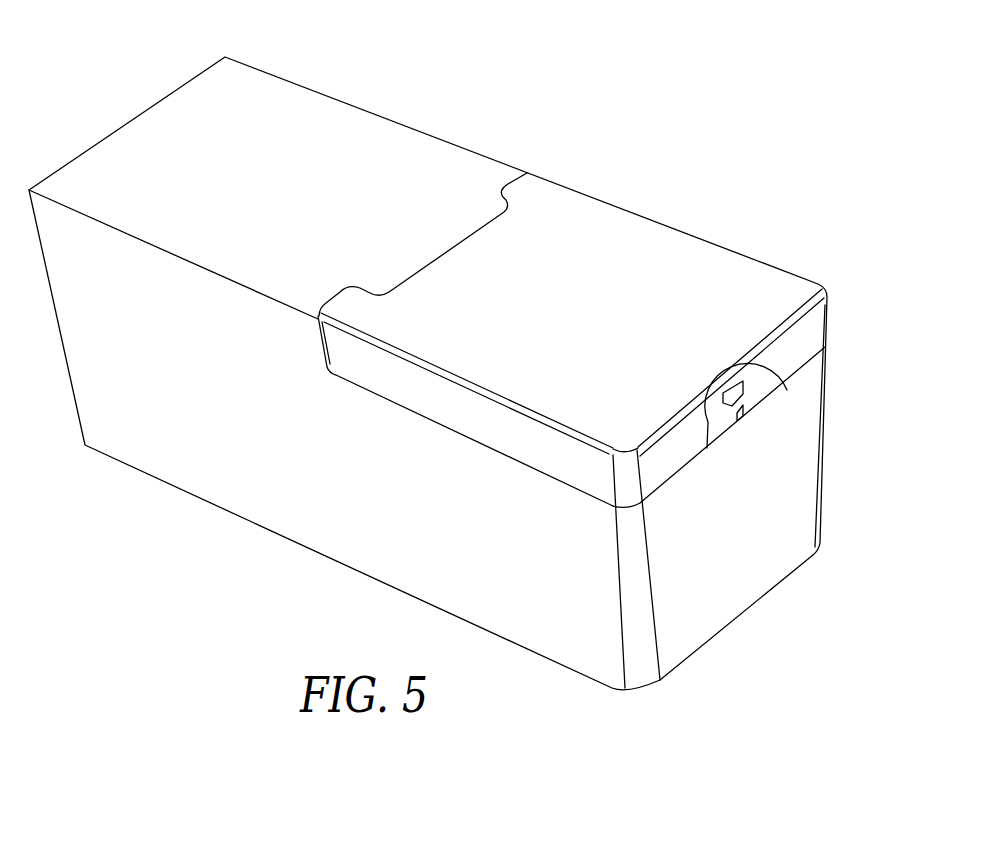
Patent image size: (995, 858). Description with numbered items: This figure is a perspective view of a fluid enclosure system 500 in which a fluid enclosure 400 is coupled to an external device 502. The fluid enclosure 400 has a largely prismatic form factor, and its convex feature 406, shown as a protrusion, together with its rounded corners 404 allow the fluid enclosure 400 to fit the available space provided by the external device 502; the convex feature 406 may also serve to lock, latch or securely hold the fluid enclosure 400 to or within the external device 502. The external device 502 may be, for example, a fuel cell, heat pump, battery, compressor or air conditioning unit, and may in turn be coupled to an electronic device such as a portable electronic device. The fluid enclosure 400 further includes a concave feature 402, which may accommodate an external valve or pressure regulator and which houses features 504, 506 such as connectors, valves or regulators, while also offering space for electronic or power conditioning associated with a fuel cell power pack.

The fluid enclosure system 500 is at (625, 79).
The external device 502 is at (163, 113).
The fluid enclosure 400 is at (645, 242).
The convex feature 406 is at (352, 294).
The rounded corners 404 is at (628, 488).
The feature housed in concave feature 504 is at (733, 385).
The concave feature 402 is at (707, 430).
The feature housed in concave feature 506 is at (740, 413).